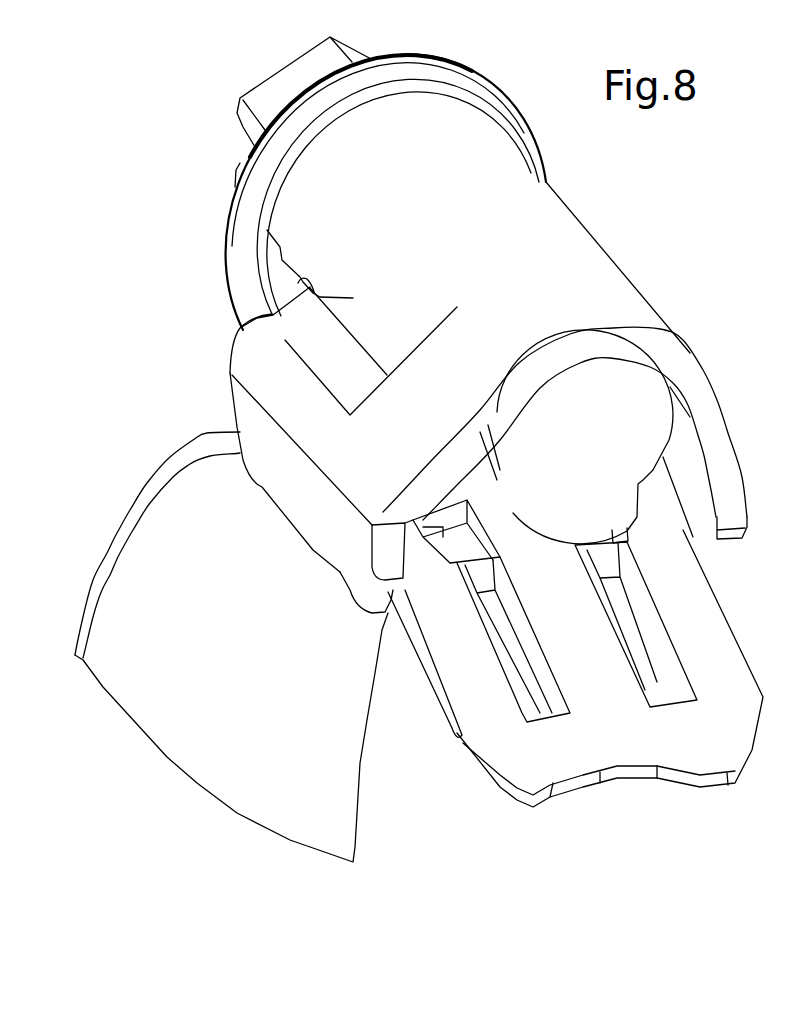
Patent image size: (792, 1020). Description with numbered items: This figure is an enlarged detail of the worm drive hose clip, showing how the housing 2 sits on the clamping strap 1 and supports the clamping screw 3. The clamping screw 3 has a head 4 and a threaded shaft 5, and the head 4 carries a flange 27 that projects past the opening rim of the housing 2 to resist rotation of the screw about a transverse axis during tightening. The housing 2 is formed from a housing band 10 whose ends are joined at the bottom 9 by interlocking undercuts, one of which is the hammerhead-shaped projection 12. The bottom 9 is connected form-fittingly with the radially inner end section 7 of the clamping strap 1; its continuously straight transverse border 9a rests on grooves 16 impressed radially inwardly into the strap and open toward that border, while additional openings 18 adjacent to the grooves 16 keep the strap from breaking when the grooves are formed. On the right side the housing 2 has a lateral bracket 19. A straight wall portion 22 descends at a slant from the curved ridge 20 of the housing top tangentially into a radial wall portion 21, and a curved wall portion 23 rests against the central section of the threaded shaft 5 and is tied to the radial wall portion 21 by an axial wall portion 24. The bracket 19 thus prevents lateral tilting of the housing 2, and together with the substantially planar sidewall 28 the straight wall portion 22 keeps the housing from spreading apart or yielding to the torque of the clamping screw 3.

The clamping strap 1 is at (105, 548).
The housing 2 is at (608, 228).
The clamping screw 3 is at (462, 45).
The head 4 is at (248, 118).
The threaded shaft 5 is at (610, 423).
The radially inner end section 7 is at (730, 617).
The bottom 9 is at (483, 540).
The transverse border 9a is at (482, 570).
The housing band 10 is at (320, 197).
The hammerhead-shaped projection 12 is at (372, 538).
The grooves 16 is at (510, 643).
The openings 18 is at (385, 613).
The lateral bracket 19 is at (238, 328).
The curved ridge 20 is at (527, 225).
The radial wall portion 21 is at (268, 447).
The wall portion 22 is at (420, 395).
The curved wall portion 23 is at (353, 298).
The axial wall portion 24 is at (307, 340).
The flange 27 is at (497, 98).
The sidewall 28 is at (733, 443).